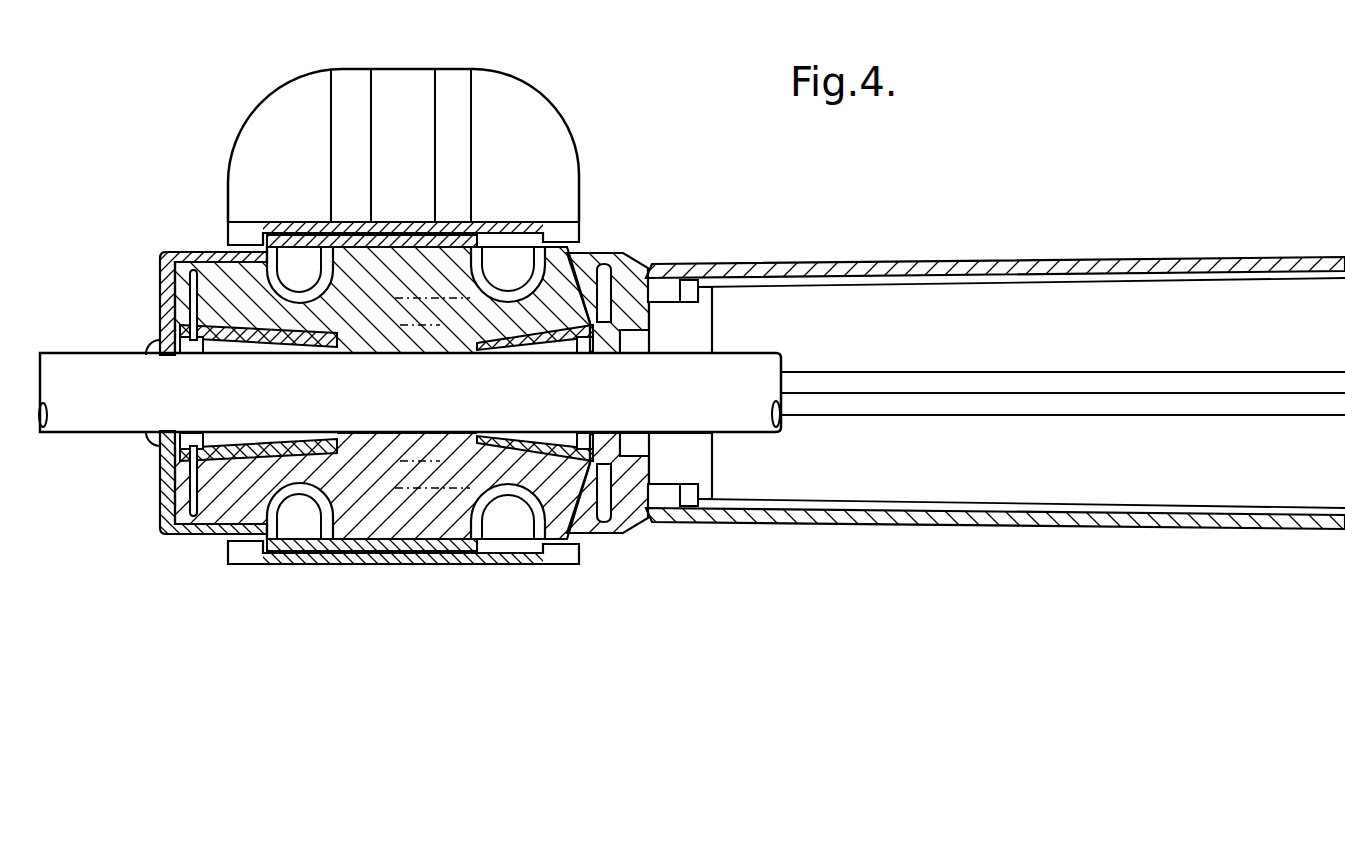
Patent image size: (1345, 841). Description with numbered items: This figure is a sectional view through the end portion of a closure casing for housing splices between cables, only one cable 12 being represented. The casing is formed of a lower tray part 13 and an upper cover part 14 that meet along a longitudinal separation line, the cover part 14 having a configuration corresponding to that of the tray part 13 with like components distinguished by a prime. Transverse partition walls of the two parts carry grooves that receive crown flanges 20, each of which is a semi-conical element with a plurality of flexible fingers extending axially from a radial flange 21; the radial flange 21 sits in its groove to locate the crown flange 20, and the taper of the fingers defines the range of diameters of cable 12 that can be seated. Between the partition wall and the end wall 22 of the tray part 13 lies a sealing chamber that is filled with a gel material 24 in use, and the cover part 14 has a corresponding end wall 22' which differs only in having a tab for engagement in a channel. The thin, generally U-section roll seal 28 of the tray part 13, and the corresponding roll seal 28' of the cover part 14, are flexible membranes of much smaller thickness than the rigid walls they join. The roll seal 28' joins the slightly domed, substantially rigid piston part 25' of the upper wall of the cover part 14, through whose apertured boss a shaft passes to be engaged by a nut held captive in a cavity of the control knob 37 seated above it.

The cable 12 is at (113, 372).
The tray part 13 is at (1010, 526).
The cover part 14 is at (1005, 262).
The crown flange 20 is at (585, 524).
The radial flange 21 is at (640, 265).
The end wall 22 is at (198, 506).
The end wall 22' is at (198, 282).
The gel material 24 is at (405, 514).
The piston part 25' is at (372, 181).
The roll seal 28 is at (508, 552).
The roll seal 28' is at (508, 224).
The control knob 37 is at (276, 118).